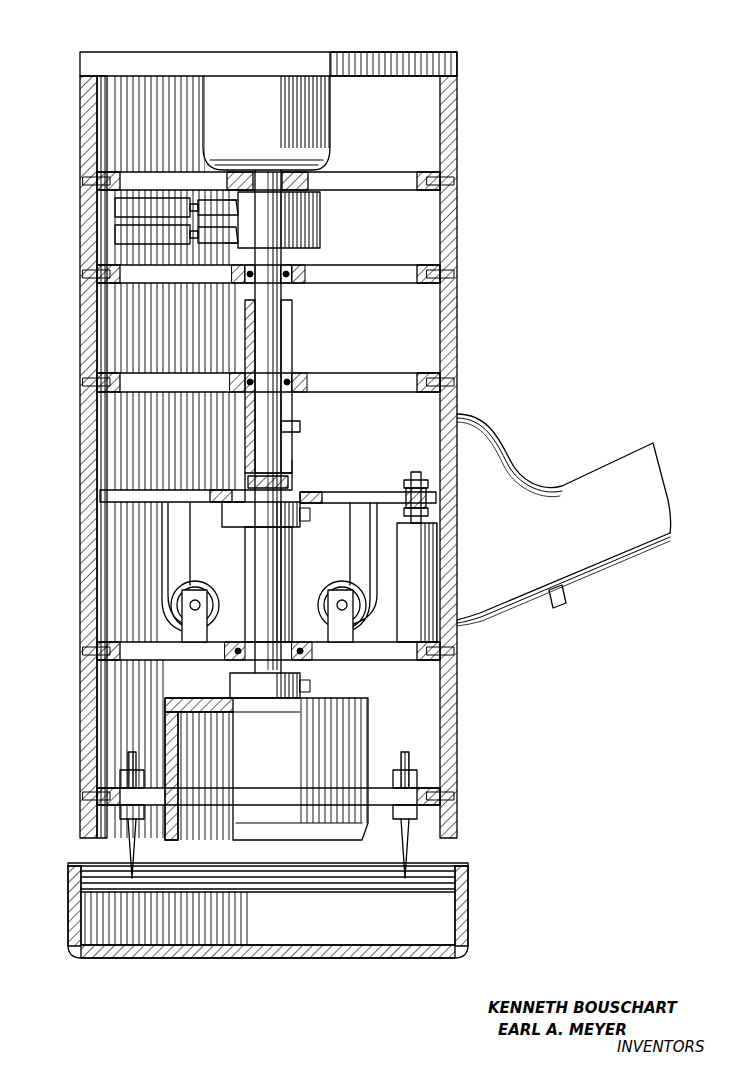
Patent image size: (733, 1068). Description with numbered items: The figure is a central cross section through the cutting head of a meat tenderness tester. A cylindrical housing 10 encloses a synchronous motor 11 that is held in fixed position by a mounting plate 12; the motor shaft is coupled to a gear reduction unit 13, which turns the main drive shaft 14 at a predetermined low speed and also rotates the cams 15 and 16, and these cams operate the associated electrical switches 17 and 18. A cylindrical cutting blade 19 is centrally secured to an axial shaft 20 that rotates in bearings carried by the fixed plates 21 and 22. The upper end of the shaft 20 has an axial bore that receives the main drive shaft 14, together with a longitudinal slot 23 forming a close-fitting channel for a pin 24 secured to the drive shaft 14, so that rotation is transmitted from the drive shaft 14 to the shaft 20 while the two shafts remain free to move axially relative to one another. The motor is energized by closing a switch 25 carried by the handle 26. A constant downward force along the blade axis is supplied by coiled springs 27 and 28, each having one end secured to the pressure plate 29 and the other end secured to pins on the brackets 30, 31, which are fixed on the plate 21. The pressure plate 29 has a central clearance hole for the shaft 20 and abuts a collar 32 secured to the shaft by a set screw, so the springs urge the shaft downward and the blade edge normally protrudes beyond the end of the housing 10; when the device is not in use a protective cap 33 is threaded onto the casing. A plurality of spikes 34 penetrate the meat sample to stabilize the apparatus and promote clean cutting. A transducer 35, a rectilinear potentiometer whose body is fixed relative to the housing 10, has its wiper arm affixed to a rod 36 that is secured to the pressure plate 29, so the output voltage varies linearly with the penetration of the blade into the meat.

The cylindrical housing 10 is at (80, 108).
The synchronous motor 11 is at (245, 95).
The mounting plate 12 is at (373, 172).
The gear reduction unit 13 is at (322, 216).
The main drive shaft 14 is at (270, 322).
The cam 15 is at (208, 205).
The cam 16 is at (220, 237).
The electrical switch 17 is at (125, 207).
The electrical switch 18 is at (125, 233).
The cylindrical cutting blade 19 is at (298, 737).
The axial shaft 20 is at (248, 326).
The fixed plate 21 is at (166, 660).
The fixed plate 22 is at (161, 390).
The longitudinal slot 23 is at (285, 342).
The pin 24 is at (300, 427).
The switch 25 is at (550, 608).
The handle 26 is at (500, 463).
The coiled spring 27 is at (163, 545).
The coiled spring 28 is at (372, 545).
The pressure plate 29 is at (150, 490).
The bracket 30 is at (199, 600).
The bracket 31 is at (333, 600).
The collar 32 is at (226, 516).
The protective cap 33 is at (468, 902).
The spikes 34 is at (125, 848).
The transducer 35 is at (437, 620).
The rod 36 is at (413, 525).